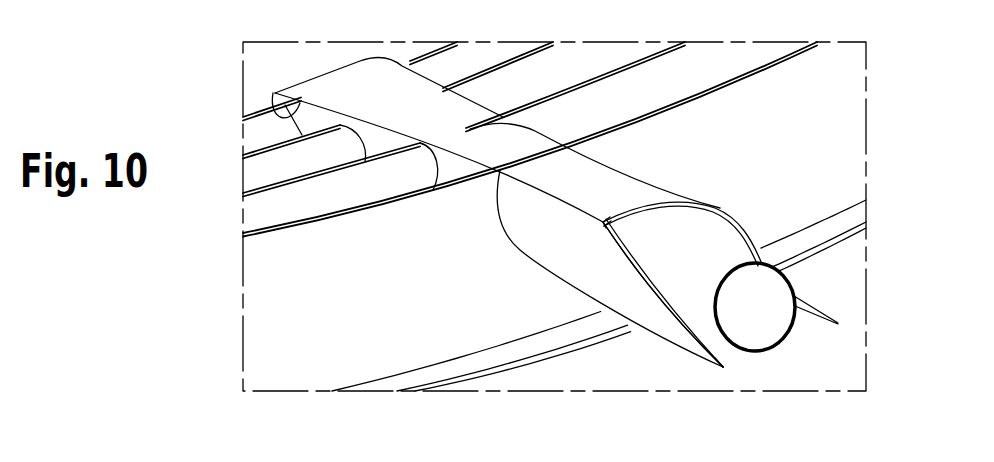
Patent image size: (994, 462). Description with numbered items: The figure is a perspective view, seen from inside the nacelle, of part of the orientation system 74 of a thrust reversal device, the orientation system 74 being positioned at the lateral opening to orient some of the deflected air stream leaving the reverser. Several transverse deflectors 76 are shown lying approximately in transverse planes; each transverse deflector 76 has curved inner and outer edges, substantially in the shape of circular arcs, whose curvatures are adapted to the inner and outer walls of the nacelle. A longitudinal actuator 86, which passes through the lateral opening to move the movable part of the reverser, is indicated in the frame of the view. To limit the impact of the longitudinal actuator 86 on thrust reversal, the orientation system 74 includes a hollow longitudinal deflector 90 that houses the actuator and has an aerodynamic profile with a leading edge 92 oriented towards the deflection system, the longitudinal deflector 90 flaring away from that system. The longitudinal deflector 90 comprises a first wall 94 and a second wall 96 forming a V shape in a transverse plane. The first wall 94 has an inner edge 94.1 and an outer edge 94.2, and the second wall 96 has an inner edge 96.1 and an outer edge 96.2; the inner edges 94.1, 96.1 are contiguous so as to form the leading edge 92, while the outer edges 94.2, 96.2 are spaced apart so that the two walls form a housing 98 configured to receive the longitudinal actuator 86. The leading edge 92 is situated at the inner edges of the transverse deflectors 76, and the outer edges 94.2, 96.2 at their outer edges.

The orientation system 74 is at (568, 370).
The transverse deflector 76 is at (257, 171).
The longitudinal actuator 86 is at (281, 49).
The longitudinal deflector 90 is at (643, 338).
The leading edge 92 is at (268, 114).
The first wall 94 is at (733, 219).
The inner edge of first wall 94.1 is at (606, 220).
The outer edge of first wall 94.2 is at (838, 323).
The second wall 96 is at (677, 348).
The inner edge of second wall 96.1 is at (603, 222).
The outer edge of second wall 96.2 is at (727, 369).
The housing 98 is at (731, 356).